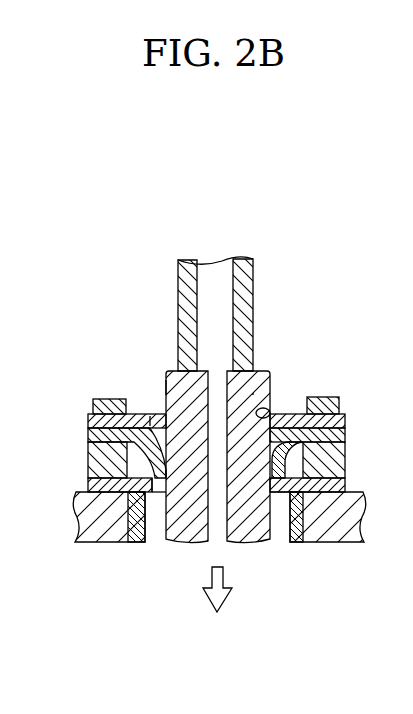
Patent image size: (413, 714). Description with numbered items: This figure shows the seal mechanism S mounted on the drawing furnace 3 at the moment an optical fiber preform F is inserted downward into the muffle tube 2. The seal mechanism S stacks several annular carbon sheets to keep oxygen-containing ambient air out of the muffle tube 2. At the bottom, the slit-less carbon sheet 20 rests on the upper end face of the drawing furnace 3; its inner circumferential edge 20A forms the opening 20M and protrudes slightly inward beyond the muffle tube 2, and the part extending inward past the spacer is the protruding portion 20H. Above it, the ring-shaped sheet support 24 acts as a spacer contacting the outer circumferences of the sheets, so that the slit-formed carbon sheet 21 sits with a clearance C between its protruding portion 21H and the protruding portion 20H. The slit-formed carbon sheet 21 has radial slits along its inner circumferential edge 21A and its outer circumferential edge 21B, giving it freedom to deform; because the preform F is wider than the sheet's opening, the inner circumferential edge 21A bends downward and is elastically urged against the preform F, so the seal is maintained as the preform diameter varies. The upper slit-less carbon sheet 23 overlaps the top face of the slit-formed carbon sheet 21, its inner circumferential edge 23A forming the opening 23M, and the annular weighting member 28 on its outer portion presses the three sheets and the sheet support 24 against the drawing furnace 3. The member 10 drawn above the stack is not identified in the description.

The seal mechanism S is at (118, 290).
The pipe 10 is at (248, 293).
The slit-less carbon sheet 23 is at (107, 412).
The inner circumferential edge 23A is at (166, 412).
The opening 23M is at (268, 410).
The optical fiber preform F is at (253, 393).
The weighting member 28 is at (333, 397).
The slit-formed carbon sheet 21 is at (95, 433).
The outer circumferential edge 21B is at (345, 433).
The protruding portion 21H is at (153, 418).
The inner circumferential edge 21A is at (163, 475).
The sheet support 24 is at (100, 460).
The slit-less carbon sheet 20 is at (100, 487).
The protruding portion 20H is at (160, 493).
The inner circumferential edge 20A is at (158, 497).
The opening 20M is at (274, 490).
The drawing furnace 3 is at (107, 522).
The clearance C is at (138, 512).
The muffle tube 2 is at (297, 538).